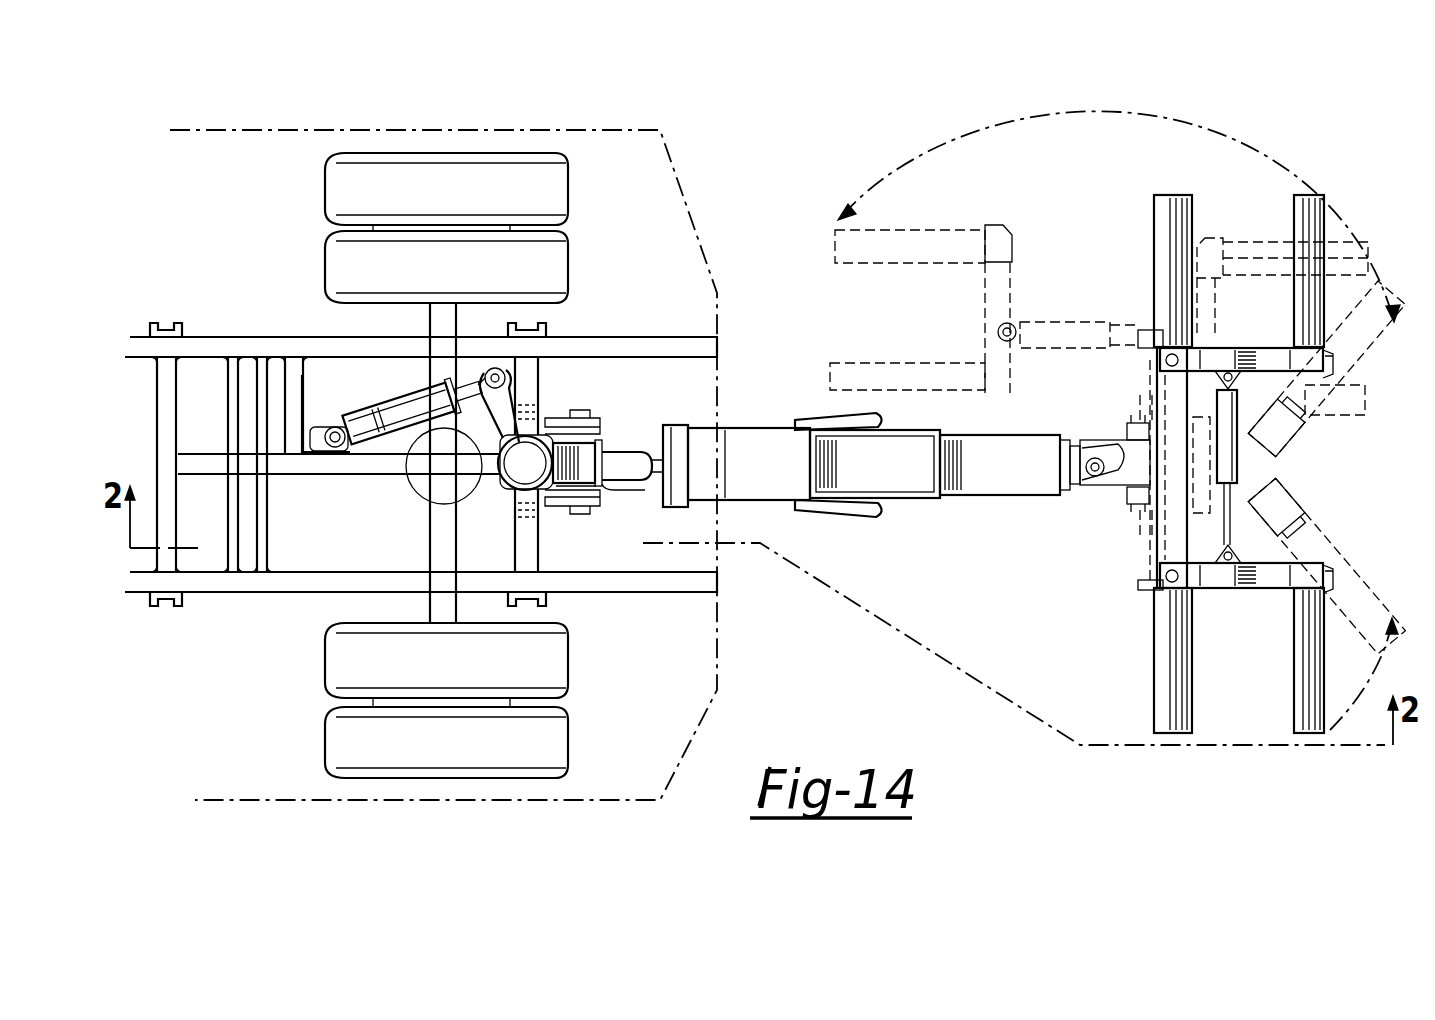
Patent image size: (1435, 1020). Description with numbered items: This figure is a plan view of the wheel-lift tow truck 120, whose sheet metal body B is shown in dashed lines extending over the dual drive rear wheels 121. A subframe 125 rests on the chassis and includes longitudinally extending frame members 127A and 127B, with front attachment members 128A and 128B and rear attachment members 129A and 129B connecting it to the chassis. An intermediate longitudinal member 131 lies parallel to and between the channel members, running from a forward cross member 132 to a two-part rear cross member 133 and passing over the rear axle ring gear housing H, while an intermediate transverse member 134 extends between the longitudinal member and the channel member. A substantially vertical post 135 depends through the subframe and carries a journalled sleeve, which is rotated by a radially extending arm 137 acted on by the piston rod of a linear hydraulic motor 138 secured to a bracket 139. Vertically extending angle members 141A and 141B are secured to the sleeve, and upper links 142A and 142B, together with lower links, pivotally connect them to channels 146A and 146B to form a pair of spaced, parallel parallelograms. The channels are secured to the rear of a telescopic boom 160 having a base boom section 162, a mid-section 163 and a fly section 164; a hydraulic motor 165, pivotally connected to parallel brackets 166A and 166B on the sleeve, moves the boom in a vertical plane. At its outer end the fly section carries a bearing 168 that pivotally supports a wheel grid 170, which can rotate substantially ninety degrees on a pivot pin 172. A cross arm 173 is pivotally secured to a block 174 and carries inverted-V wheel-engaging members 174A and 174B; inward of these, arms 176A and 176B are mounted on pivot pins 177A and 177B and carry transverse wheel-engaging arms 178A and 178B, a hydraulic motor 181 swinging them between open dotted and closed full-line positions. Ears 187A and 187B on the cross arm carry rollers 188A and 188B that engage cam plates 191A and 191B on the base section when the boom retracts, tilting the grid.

The tow truck 120 is at (784, 224).
The rear wheels 121 is at (340, 195).
The subframe 125 is at (787, 306).
The longitudinally extending frame member 127A is at (357, 593).
The longitudinally extending frame member 127B is at (622, 336).
The front attachment member 128A is at (188, 606).
The front attachment member 128B is at (186, 330).
The rear attachment member 129A is at (548, 606).
The rear attachment member 129B is at (548, 334).
The intermediate longitudinal member 131 is at (330, 474).
The forward cross member 132 is at (158, 400).
The rear cross member 133 is at (512, 358).
The intermediate transverse member 134 is at (303, 392).
The post 135 is at (543, 497).
The radially extending arm 137 is at (476, 382).
The linear hydraulic motor 138 is at (378, 420).
The bracket 139 is at (318, 447).
The angle member 141A is at (510, 505).
The angle member 141B is at (530, 392).
The upper link 142A is at (550, 520).
The upper link 142B is at (552, 420).
The channel 146A is at (608, 512).
The channel 146B is at (598, 425).
The telescopic boom 160 is at (980, 520).
The base boom section 162 is at (747, 490).
The mid-section 163 is at (907, 485).
The fly section 164 is at (997, 482).
The hydraulic motor 165 is at (706, 430).
The bracket 166A is at (605, 498).
The bracket 166B is at (632, 450).
The bearing 168 is at (1065, 495).
The wheel grid 170 is at (1120, 650).
The pivot pin 172 is at (1085, 448).
The cross arm 173 is at (1152, 565).
The block 174 is at (1128, 478).
The wheel-engaging member 174A is at (1180, 678).
The wheel-engaging member 174B is at (1162, 233).
The arm 176A is at (1217, 578).
The arm 176B is at (1228, 355).
The pivot pin 177A is at (1153, 588).
The pivot pin 177B is at (1150, 338).
The wheel-engaging arm 178A is at (1297, 703).
The wheel-engaging arm 178B is at (1306, 328).
The hydraulic motor 181 is at (1238, 460).
The ear 187A is at (1152, 528).
The ear 187B is at (1150, 398).
The roller 188A is at (1125, 508).
The roller 188B is at (1115, 432).
The cam plate 191A is at (862, 516).
The cam plate 191B is at (820, 412).
The body B is at (700, 196).
The rear axle ring gear housing H is at (420, 498).